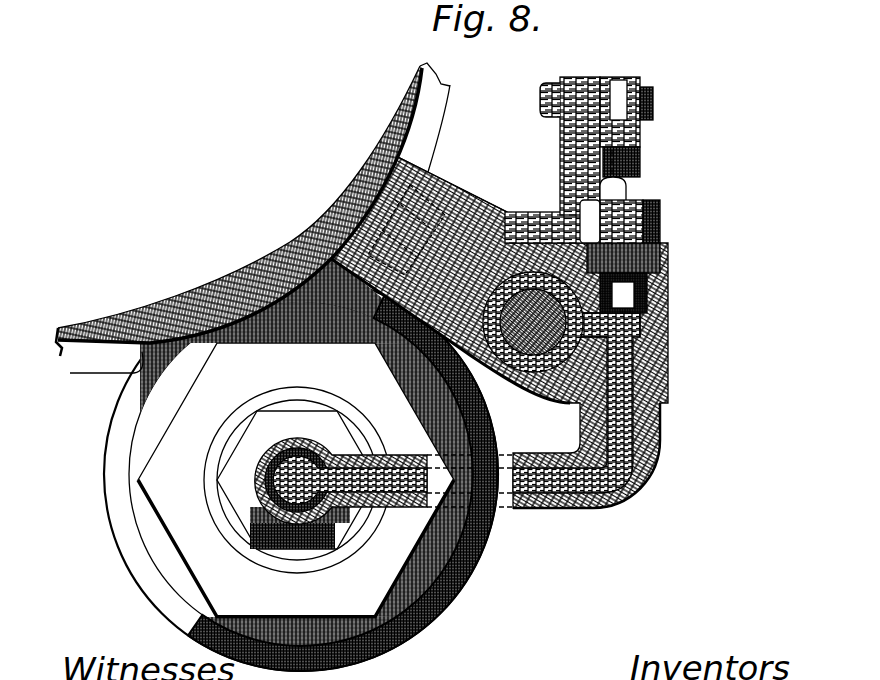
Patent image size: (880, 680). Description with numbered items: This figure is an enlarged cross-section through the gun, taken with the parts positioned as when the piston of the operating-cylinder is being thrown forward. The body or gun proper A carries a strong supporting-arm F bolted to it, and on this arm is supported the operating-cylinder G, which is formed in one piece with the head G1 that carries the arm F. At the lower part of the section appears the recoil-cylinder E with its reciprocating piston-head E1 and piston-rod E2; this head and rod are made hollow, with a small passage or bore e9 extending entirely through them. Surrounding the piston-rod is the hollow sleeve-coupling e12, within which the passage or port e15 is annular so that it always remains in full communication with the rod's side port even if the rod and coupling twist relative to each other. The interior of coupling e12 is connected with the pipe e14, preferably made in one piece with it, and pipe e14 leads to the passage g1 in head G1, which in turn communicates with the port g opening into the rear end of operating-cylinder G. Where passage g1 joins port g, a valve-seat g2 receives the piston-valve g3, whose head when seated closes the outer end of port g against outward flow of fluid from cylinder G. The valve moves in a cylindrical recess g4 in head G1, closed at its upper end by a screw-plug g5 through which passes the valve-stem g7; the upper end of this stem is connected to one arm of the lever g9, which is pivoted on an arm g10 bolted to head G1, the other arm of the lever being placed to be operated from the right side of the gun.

The body or gun proper A is at (300, 258).
The supporting-arm F is at (460, 213).
The operating-cylinder G is at (501, 384).
The head G1 is at (662, 320).
The port g is at (594, 336).
The passage g1 is at (633, 377).
The valve-seat g2 is at (640, 338).
The piston-valve g3 is at (642, 300).
The cylindrical recess g4 is at (667, 272).
The screw-plug g5 is at (653, 234).
The valve-stem g7 is at (638, 163).
The lever g9 is at (617, 82).
The arm g10 is at (577, 150).
The recoil-cylinder E is at (457, 557).
The piston-head E1 is at (533, 335).
The piston-rod E2 is at (247, 497).
The passage or bore e9 is at (247, 470).
The hollow sleeve-coupling e12 is at (310, 432).
The pipe e14 is at (410, 457).
The annular passage or port e15 is at (281, 448).